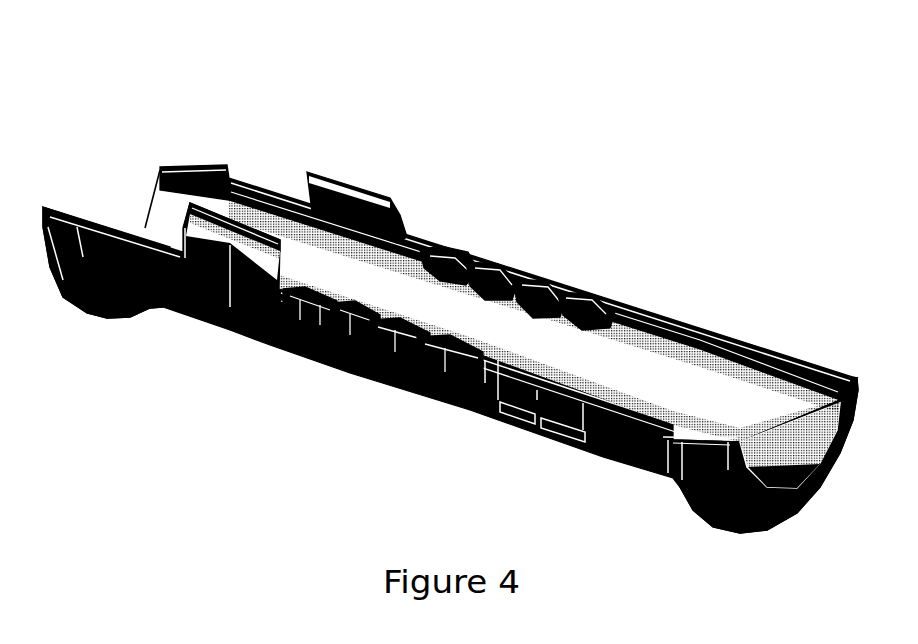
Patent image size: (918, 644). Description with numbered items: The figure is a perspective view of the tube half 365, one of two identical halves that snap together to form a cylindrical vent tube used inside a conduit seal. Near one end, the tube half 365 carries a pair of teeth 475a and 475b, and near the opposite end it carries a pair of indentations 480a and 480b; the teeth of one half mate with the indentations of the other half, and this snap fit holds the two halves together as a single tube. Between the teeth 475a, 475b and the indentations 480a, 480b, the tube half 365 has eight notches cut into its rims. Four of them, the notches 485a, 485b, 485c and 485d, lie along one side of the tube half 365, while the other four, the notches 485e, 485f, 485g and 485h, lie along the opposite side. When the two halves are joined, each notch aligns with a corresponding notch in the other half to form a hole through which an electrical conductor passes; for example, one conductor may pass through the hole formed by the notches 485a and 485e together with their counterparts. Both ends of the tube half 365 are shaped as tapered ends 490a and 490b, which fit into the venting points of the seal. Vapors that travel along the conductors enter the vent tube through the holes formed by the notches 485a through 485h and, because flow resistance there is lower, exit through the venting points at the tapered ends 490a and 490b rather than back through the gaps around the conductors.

The tube half 365 is at (488, 60).
The tooth 475a is at (230, 330).
The tooth 475b is at (348, 186).
The indentation 480a is at (538, 440).
The indentation 480b is at (673, 340).
The notch 485a is at (293, 352).
The notch 485b is at (348, 372).
The notch 485c is at (403, 392).
The notch 485d is at (458, 410).
The notch 485e is at (425, 250).
The notch 485f is at (483, 268).
The notch 485g is at (540, 285).
The notch 485h is at (598, 297).
The tapered end 490a is at (97, 318).
The tapered end 490b is at (790, 517).